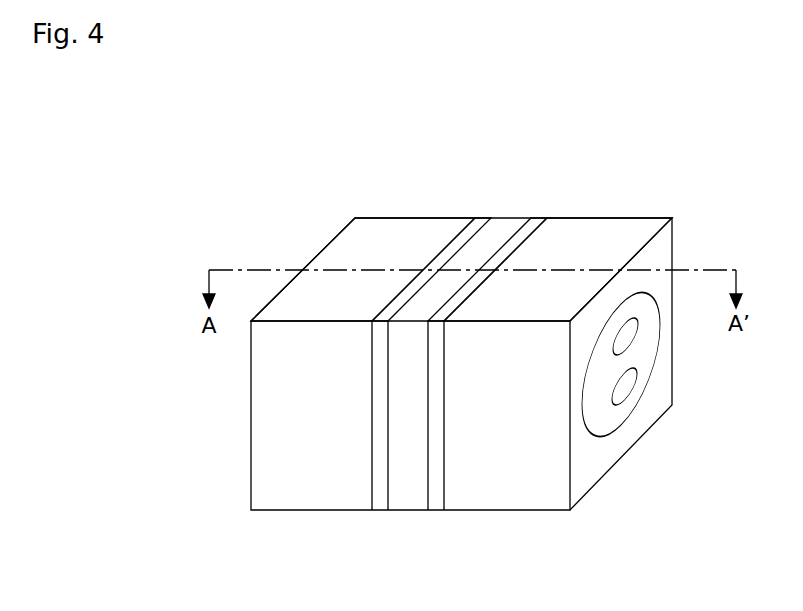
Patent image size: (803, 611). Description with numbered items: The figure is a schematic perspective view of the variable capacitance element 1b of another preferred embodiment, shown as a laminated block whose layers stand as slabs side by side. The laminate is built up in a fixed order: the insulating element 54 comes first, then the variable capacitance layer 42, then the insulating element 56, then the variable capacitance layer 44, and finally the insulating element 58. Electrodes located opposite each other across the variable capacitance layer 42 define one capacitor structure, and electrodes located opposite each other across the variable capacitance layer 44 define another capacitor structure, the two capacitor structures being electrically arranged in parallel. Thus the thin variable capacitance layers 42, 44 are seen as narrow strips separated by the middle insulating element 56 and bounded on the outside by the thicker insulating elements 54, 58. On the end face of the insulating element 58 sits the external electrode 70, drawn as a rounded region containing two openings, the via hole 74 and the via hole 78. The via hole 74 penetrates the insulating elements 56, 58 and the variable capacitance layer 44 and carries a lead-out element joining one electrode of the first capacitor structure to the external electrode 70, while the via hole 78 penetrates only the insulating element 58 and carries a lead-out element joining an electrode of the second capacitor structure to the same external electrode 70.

The variable capacitance element 1b is at (262, 222).
The variable capacitance layer 42 is at (476, 223).
The variable capacitance layer 44 is at (532, 223).
The insulating element 54 is at (390, 225).
The insulating element 56 is at (413, 497).
The insulating element 58 is at (629, 223).
The external electrode 70 is at (610, 423).
The via hole 74 is at (627, 339).
The via hole 78 is at (627, 383).